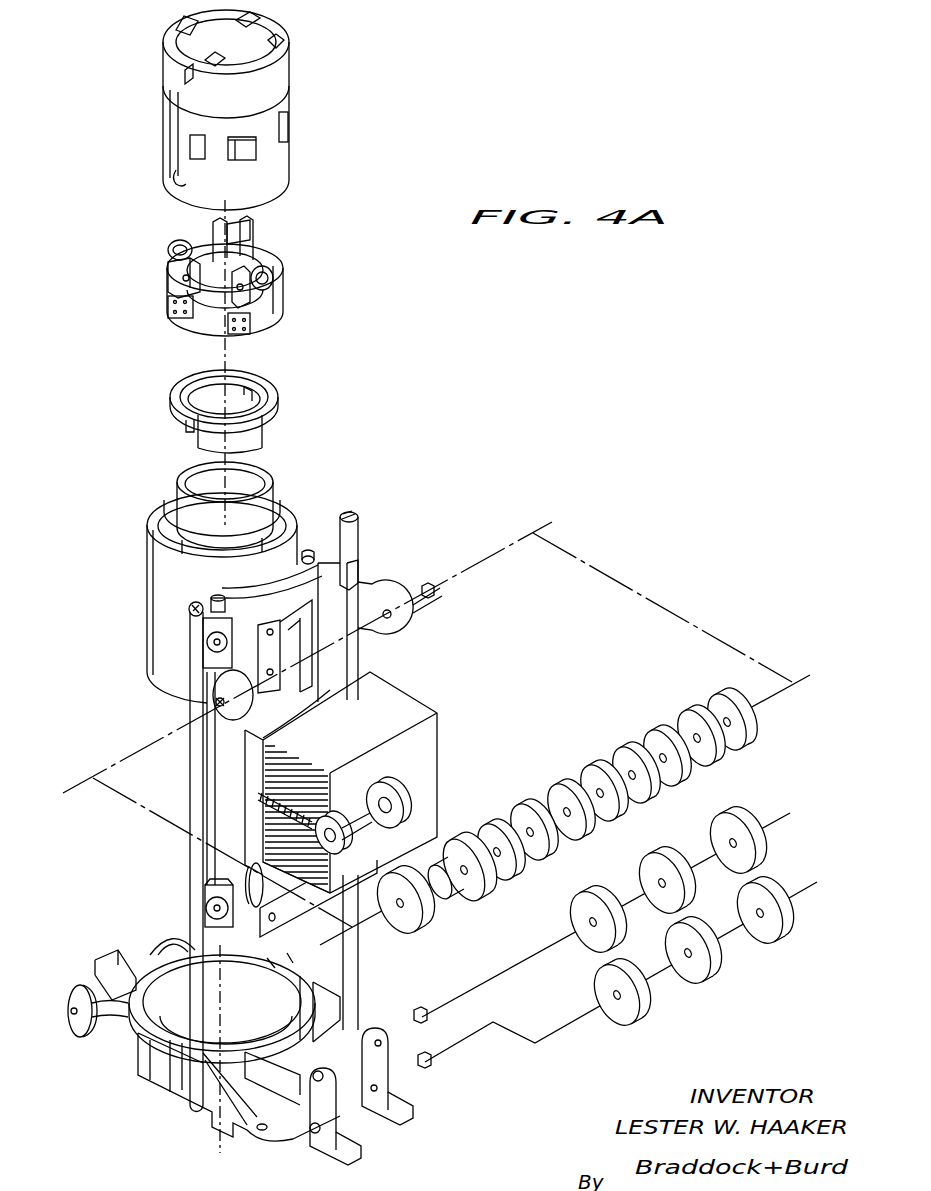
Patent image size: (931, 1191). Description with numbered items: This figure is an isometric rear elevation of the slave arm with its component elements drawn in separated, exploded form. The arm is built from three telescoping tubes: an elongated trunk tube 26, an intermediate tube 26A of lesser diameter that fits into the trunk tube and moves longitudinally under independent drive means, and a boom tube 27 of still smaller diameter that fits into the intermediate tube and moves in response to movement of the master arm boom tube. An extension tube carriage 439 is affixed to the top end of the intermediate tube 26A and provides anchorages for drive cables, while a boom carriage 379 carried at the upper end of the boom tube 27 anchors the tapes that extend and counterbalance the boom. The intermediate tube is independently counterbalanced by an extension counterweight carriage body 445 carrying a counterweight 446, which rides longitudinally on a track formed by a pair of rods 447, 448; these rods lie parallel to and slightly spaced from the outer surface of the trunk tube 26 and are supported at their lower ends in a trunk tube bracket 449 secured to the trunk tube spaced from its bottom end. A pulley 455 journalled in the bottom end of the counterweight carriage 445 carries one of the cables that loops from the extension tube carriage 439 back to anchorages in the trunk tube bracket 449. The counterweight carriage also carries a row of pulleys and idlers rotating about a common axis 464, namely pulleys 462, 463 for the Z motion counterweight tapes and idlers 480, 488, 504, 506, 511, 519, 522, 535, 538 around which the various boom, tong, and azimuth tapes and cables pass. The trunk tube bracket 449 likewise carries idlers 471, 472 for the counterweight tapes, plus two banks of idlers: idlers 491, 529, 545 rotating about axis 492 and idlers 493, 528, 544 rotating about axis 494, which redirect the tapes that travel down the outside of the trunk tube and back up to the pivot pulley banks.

The trunk tube 26 is at (160, 583).
The intermediate tube 26A is at (165, 500).
The boom tube 27 is at (180, 470).
The boom carriage 379 is at (287, 290).
The extension tube carriage 439 is at (285, 158).
The extension counterweight carriage body 445 is at (222, 778).
The counterweight 446 is at (395, 695).
The rod 447 is at (195, 707).
The rod 448 is at (360, 540).
The trunk tube bracket 449 is at (160, 1080).
The pulley 455 is at (227, 938).
The pulley 462 is at (394, 926).
The pulley 463 is at (755, 733).
The axis 464 is at (518, 540).
The idler 471 is at (75, 1025).
The idler 472 is at (160, 940).
The idler 480 is at (441, 922).
The idler 488 is at (480, 895).
The idler 491 is at (664, 852).
The axis 492 is at (778, 820).
The idler 493 is at (700, 982).
The axis 494 is at (790, 890).
The idler 504 is at (565, 790).
The idler 506 is at (693, 712).
The idler 511 is at (660, 730).
The idler 519 is at (630, 748).
The idler 522 is at (602, 765).
The idler 528 is at (772, 942).
The idler 529 is at (740, 812).
The idler 535 is at (487, 823).
The idler 538 is at (540, 858).
The idler 544 is at (628, 1024).
The idler 545 is at (596, 890).